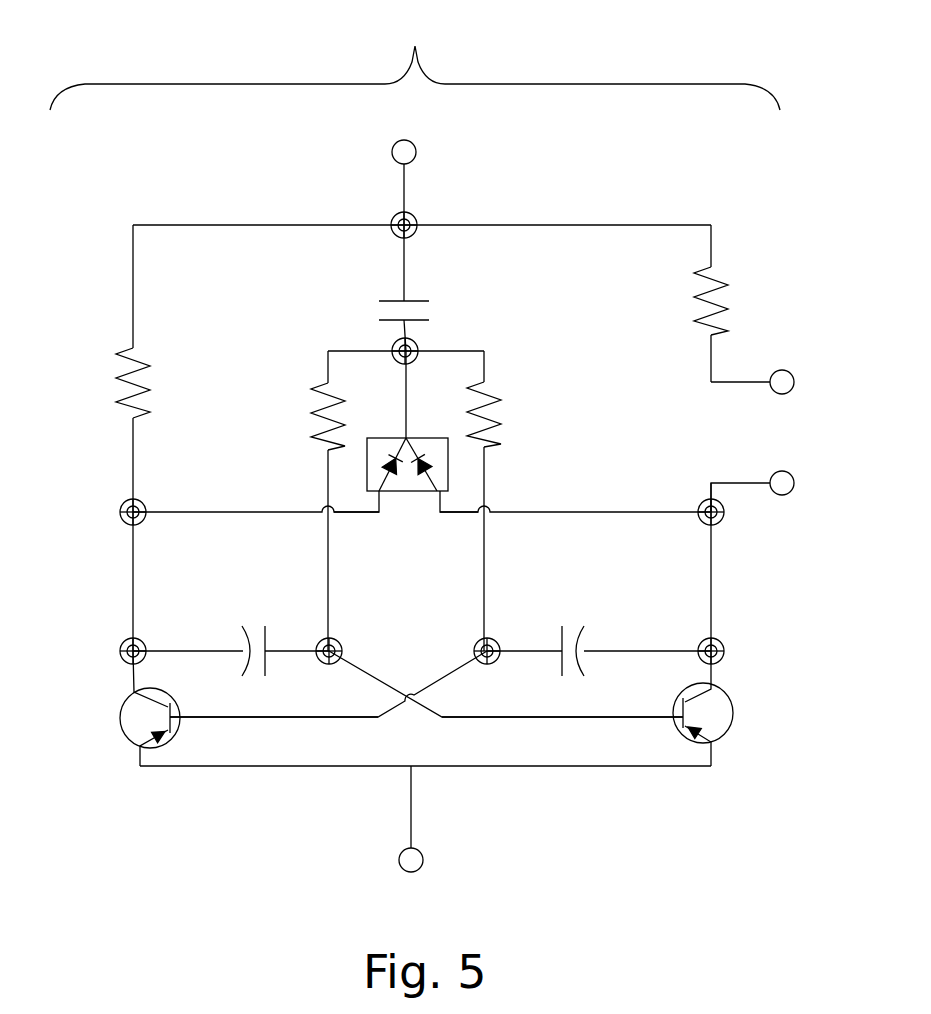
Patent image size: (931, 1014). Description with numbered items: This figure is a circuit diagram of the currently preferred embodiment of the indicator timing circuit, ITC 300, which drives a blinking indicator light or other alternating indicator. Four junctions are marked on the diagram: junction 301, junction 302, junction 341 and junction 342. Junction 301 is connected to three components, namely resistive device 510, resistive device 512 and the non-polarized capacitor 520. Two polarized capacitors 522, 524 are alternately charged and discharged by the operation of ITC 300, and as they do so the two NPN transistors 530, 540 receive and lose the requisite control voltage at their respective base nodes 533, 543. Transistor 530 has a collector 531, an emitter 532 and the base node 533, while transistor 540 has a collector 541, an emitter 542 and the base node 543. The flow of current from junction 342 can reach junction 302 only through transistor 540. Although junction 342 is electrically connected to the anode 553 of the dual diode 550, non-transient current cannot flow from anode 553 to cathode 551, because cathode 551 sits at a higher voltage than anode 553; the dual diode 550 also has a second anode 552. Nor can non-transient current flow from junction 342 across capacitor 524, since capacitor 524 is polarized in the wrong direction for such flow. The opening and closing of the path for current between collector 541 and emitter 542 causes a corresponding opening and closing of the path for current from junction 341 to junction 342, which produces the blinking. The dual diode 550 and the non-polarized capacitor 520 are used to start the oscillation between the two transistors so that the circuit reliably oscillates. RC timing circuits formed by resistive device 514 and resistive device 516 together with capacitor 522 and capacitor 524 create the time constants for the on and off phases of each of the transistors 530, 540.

The indicator timing circuit 300 is at (415, 64).
The junction 301 is at (416, 152).
The junction 302 is at (422, 858).
The junction 341 is at (785, 370).
The junction 342 is at (785, 495).
The resistive device 510 is at (150, 363).
The resistive device 512 is at (729, 317).
The resistive device 514 is at (296, 501).
The resistive device 516 is at (511, 501).
The non-polarized capacitor 520 is at (437, 294).
The polarized capacitor 522 is at (231, 635).
The polarized capacitor 524 is at (599, 634).
The NPN transistor 530 is at (213, 741).
The collector 531 is at (136, 692).
The emitter 532 is at (138, 748).
The base node 533 is at (205, 717).
The NPN transistor 540 is at (641, 708).
The collector 541 is at (722, 692).
The emitter 542 is at (717, 757).
The base node 543 is at (660, 717).
The dual diode 550 is at (407, 491).
The cathode 551 is at (408, 392).
The anode 552 is at (352, 514).
The anode 553 is at (450, 512).